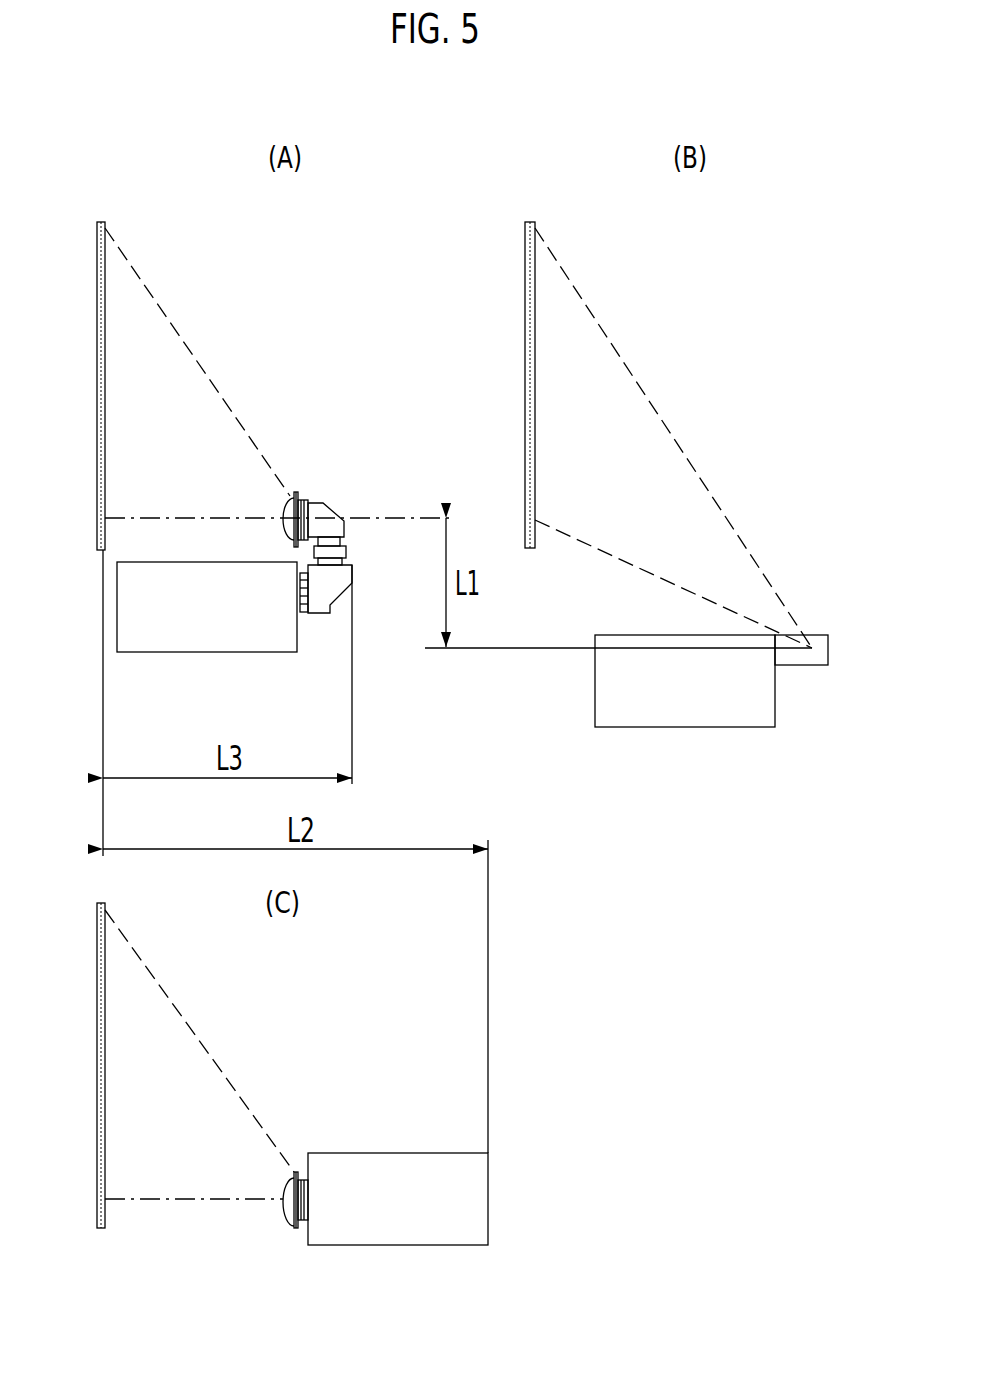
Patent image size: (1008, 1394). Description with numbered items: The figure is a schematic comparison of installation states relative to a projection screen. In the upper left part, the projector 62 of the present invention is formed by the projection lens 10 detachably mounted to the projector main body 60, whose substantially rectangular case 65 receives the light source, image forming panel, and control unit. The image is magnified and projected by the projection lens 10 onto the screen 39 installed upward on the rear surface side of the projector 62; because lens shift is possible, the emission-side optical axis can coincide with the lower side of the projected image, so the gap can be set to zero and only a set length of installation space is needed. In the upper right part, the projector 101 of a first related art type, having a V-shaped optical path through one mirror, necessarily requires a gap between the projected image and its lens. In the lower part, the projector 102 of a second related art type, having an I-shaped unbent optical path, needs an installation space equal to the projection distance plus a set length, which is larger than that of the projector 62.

The screen 39 is at (105, 226).
The projector 62 is at (327, 447).
The projection lens 10 is at (323, 505).
The projector main body 60 is at (234, 647).
The case 65 is at (208, 648).
The projector of a first related art type 101 is at (631, 730).
The projector of a second related art type 102 is at (362, 1249).